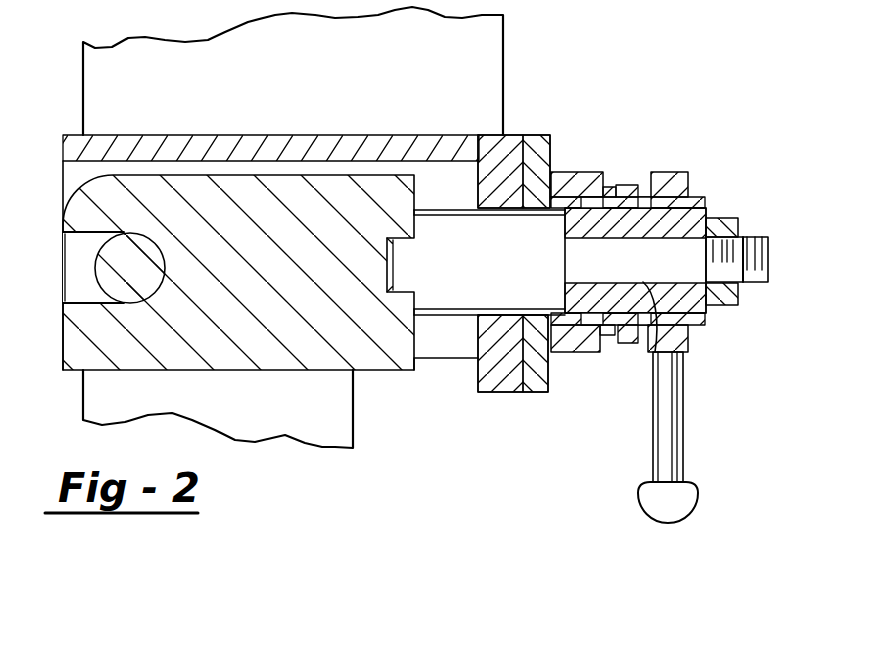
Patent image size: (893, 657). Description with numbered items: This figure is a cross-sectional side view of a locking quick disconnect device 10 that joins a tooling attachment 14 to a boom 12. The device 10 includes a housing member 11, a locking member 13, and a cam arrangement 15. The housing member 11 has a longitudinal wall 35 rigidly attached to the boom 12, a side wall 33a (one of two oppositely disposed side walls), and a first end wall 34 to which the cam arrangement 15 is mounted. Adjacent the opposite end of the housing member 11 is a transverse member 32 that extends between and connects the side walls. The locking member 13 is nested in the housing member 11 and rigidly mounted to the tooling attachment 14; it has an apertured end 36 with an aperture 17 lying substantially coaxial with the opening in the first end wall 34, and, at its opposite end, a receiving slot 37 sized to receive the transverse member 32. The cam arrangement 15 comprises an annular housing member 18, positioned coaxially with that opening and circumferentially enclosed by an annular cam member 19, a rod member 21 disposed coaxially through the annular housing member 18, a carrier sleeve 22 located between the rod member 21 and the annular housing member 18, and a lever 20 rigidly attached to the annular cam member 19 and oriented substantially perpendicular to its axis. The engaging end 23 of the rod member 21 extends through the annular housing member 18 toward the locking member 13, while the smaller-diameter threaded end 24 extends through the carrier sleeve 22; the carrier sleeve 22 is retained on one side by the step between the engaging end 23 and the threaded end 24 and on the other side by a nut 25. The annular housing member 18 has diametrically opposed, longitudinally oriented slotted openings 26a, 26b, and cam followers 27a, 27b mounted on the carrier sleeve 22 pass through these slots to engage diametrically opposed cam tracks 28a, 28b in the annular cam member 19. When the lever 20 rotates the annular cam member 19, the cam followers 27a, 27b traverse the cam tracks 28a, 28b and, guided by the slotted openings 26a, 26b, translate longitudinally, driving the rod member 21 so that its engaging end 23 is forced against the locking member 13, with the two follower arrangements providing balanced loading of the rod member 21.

The locking quick disconnect device 10 is at (336, 104).
The housing member 11 is at (418, 133).
The boom 12 is at (222, 43).
The locking member 13 is at (242, 374).
The tooling attachment 14 is at (160, 404).
The cam arrangement 15 is at (646, 90).
The aperture 17 is at (390, 295).
The annular housing member 18 is at (543, 146).
The annular cam member 19 is at (673, 195).
The lever 20 is at (675, 418).
The rod member 21 is at (530, 304).
The carrier sleeve 22 is at (655, 352).
The engaging end 23 is at (393, 267).
The threaded end 24 is at (748, 238).
The nut 25 is at (717, 312).
The slotted opening 26a is at (620, 192).
The slotted opening 26b is at (608, 313).
The cam follower 27a is at (657, 174).
The cam follower 27b is at (623, 345).
The cam track 28a is at (616, 188).
The cam track 28b is at (605, 352).
The transverse member 32 is at (143, 263).
The side wall 33a is at (438, 342).
The first end wall 34 is at (493, 380).
The longitudinal wall 35 is at (237, 143).
The apertured end 36 is at (377, 362).
The receiving slot 37 is at (90, 305).